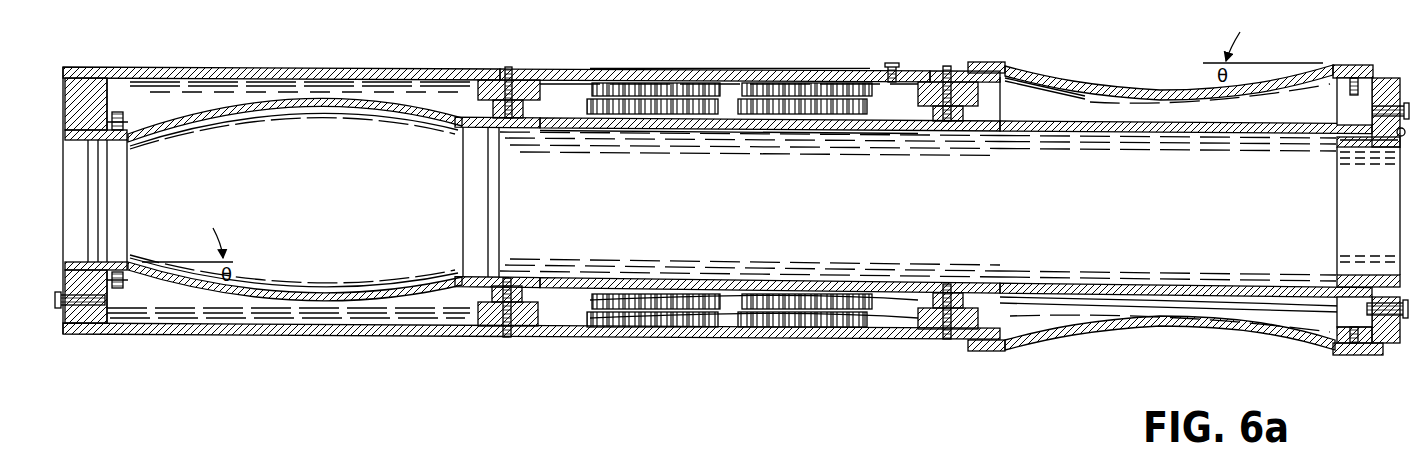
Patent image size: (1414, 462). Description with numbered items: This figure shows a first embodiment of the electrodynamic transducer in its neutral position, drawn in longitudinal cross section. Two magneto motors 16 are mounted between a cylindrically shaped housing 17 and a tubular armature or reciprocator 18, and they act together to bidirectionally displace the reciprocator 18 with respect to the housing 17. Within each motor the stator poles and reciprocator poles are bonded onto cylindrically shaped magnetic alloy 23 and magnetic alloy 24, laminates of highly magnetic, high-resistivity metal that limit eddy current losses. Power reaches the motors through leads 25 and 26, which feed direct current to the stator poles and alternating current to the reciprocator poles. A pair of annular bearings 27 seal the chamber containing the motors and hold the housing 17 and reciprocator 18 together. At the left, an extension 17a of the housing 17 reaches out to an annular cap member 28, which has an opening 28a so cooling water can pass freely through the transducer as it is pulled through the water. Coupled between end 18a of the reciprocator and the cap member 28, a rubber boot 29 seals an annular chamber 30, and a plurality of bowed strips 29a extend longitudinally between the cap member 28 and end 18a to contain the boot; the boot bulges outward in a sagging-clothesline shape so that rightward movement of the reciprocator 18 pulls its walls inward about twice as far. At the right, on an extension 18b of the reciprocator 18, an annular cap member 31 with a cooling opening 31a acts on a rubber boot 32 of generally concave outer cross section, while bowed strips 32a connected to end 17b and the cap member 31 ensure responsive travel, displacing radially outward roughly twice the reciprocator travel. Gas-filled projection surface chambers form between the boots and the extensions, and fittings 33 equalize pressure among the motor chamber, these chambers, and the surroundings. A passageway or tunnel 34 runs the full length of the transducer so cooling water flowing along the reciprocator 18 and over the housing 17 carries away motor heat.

The motor 16 is at (627, 65).
The housing 17 is at (768, 71).
The extension of the housing 17a is at (196, 67).
The end 17b is at (932, 72).
The reciprocator 18 is at (788, 131).
The end of the reciprocator 18a is at (502, 130).
The extension of reciprocator 18b is at (1115, 132).
The cylindrically shaped magnetic alloy 23 is at (692, 83).
The cylindrically shaped magnetic alloy 24 is at (645, 132).
The lead 25 is at (1078, 303).
The lead 26 is at (1030, 297).
The annular bearing 27 is at (530, 82).
The annular cap member 28 is at (70, 76).
The opening 28a is at (75, 140).
The rubber boot 29 is at (325, 292).
The bowed strips 29a is at (372, 298).
The annular chamber 30 is at (156, 104).
The annular cap member 31 is at (1402, 80).
The opening 31a is at (1350, 150).
The rubber boot 32 is at (1096, 88).
The bowed strips 32a is at (1070, 94).
The fittings 33 is at (105, 300).
The passageway or tunnel 34 is at (902, 209).